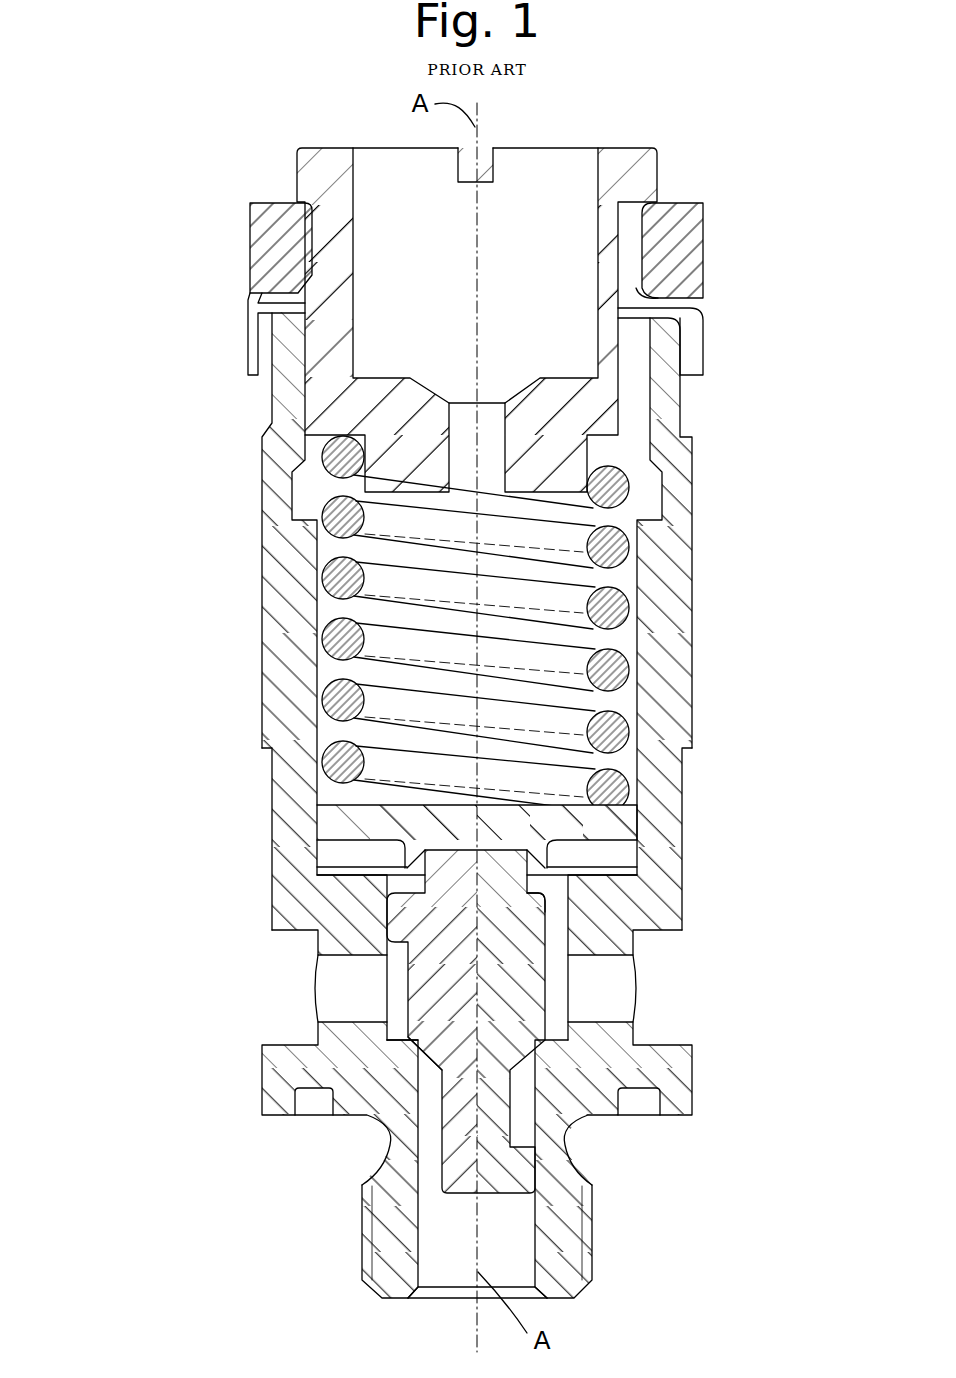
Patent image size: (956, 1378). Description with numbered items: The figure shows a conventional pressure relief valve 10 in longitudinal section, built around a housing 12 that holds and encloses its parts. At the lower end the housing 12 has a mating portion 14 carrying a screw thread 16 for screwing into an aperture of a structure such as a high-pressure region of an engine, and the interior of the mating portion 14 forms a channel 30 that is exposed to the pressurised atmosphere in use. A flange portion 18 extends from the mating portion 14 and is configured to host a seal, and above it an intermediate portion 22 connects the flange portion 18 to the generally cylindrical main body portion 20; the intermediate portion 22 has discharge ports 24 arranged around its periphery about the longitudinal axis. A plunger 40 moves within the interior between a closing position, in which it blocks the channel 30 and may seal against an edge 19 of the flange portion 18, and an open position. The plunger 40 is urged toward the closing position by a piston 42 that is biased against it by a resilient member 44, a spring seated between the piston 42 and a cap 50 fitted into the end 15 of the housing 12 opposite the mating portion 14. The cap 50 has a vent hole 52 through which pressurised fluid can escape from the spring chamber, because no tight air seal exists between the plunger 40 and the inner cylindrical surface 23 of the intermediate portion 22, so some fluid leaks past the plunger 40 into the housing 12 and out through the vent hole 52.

The valve 10 is at (145, 258).
The housing 12 is at (680, 570).
The mating portion 14 is at (568, 1227).
The end of the valve housing 15 is at (663, 342).
The screw thread 16 is at (367, 1230).
The flange portion 18 is at (682, 1073).
The edge 19 is at (413, 1047).
The main body portion 20 is at (672, 774).
The intermediate portion 22 is at (608, 945).
The inner cylindrical surface 23 is at (552, 899).
The discharge ports 24 is at (343, 997).
The channel 30 is at (420, 1262).
The plunger 40 is at (457, 915).
The piston 42 is at (617, 822).
The resilient member 44 is at (620, 668).
The cap 50 is at (607, 404).
The vent hole 52 is at (500, 418).